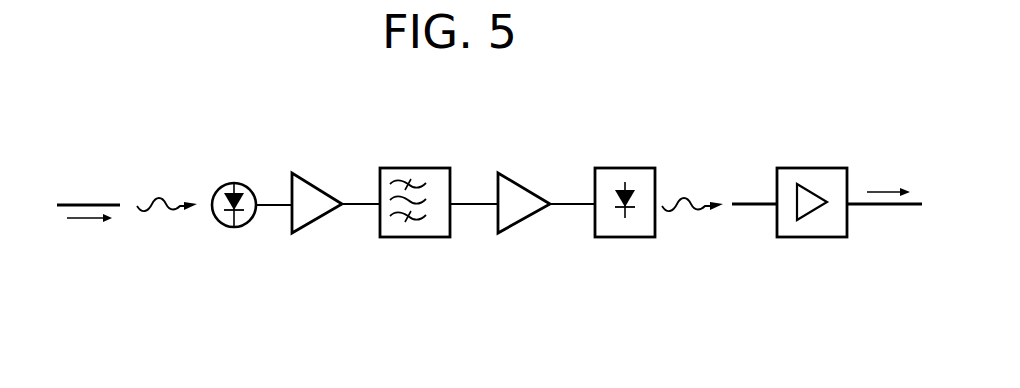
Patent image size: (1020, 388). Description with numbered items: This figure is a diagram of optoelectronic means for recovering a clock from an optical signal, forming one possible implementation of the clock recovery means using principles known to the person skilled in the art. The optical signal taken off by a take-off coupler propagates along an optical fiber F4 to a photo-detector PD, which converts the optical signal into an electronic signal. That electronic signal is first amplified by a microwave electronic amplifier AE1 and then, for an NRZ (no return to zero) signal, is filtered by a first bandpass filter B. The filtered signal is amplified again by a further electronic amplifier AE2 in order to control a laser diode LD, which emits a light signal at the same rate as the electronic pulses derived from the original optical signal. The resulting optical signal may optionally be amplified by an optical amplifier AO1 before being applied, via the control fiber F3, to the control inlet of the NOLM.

The optical fiber F4 is at (83, 203).
The photo-detector PD is at (220, 186).
The microwave electronic amplifier AE1 is at (304, 195).
The first bandpass filter B is at (430, 178).
The electronic amplifier AE2 is at (517, 195).
The laser diode LD is at (640, 182).
The optical amplifier AO1 is at (830, 182).
The control fiber F3 is at (888, 207).